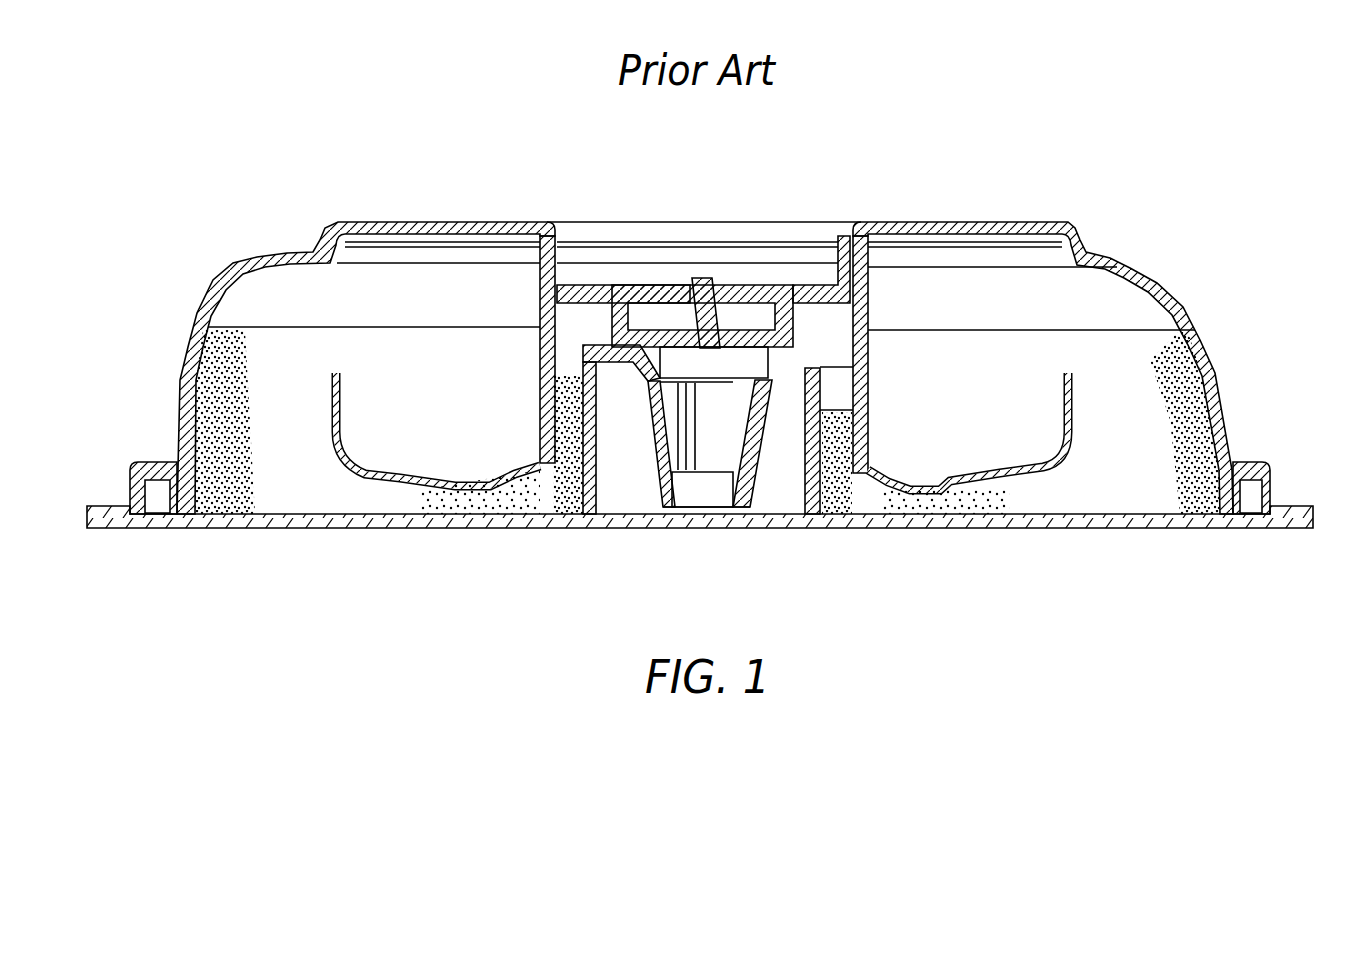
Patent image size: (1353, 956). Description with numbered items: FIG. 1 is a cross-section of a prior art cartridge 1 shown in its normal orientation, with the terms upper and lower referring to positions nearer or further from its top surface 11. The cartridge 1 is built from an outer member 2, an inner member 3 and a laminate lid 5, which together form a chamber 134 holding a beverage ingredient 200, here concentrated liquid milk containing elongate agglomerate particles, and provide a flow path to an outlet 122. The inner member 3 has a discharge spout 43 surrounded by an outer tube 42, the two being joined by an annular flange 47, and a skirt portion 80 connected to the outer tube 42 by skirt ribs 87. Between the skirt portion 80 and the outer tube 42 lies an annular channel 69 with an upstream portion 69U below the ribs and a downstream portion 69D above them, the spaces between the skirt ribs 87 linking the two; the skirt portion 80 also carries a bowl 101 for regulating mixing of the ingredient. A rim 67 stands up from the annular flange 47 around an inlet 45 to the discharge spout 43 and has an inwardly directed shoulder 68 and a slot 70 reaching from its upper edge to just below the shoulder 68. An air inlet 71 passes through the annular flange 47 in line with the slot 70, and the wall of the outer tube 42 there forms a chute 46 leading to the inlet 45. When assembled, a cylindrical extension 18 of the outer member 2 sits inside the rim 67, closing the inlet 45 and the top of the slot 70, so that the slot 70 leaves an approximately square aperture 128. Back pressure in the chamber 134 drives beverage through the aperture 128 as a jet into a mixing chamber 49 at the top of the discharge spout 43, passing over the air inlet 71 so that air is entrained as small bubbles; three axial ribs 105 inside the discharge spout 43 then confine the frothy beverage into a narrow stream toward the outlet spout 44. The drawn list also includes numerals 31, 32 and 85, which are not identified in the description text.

The cartridge 1 is at (1152, 197).
The outer member 2 is at (1165, 293).
The inner member 3 is at (868, 318).
The laminate lid 5 is at (1158, 528).
The top surface 11 is at (447, 220).
The cylindrical extension 18 is at (730, 268).
The valve seat block 31 is at (650, 340).
The lid edge 32 is at (561, 232).
The outer tube 42 is at (806, 495).
The discharge spout 43 is at (757, 465).
The outlet spout 44 is at (702, 490).
The inlet 45 is at (711, 360).
The chute 46 is at (600, 300).
The annular flange 47 is at (822, 368).
The mixing chamber 49 is at (742, 358).
The rim 67 is at (808, 295).
The shoulder 68 is at (790, 383).
The annular channel 69 is at (870, 442).
The downstream portion 69D is at (545, 362).
The upstream portion 69U is at (545, 515).
The slot 70 is at (600, 350).
The air inlet 71 is at (630, 398).
The skirt portion 80 is at (868, 284).
The desiccant fill 85 is at (890, 514).
The skirt ribs 87 is at (538, 404).
The bowl 101 is at (1003, 480).
The axial ribs 105 is at (690, 470).
The outlet 122 is at (755, 538).
The aperture 128 is at (612, 352).
The chamber 134 is at (366, 305).
The beverage ingredient 200 is at (263, 495).